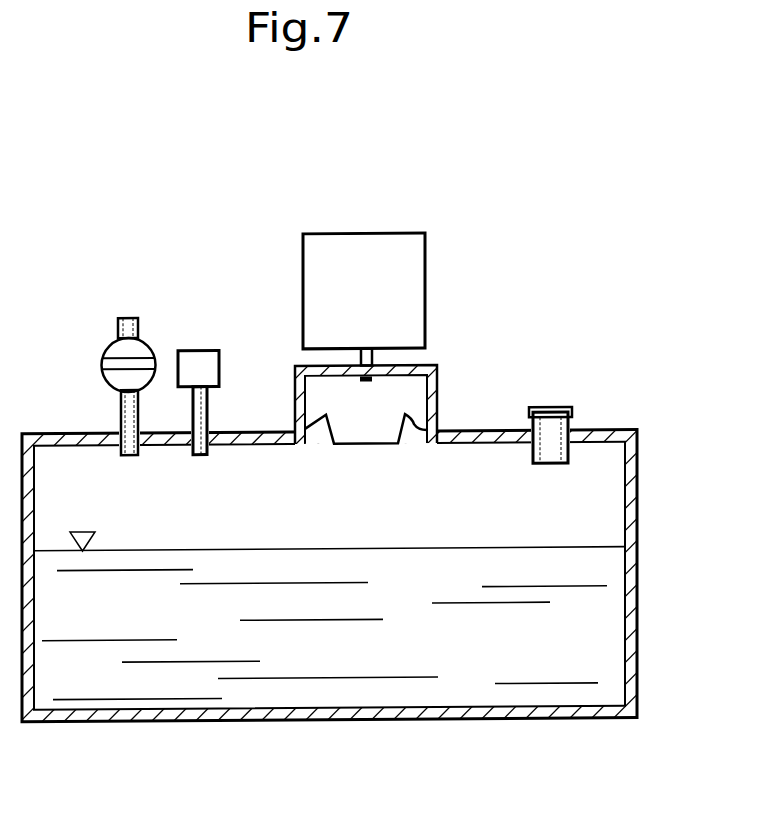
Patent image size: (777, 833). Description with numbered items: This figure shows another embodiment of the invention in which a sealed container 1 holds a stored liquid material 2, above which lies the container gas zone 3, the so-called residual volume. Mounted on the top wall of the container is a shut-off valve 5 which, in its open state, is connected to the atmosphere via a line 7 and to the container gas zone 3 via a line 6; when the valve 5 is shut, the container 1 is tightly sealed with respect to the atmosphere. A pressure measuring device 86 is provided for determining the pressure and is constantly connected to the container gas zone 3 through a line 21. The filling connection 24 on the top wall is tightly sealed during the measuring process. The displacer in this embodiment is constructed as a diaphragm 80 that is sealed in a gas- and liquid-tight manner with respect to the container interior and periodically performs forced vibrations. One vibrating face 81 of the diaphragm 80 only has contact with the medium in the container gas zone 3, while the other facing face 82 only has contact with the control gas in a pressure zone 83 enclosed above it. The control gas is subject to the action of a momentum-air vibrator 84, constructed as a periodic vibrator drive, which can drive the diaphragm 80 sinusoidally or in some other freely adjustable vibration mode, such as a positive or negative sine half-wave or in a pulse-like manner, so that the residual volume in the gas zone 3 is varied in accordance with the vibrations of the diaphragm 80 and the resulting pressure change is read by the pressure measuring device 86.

The container 1 is at (637, 630).
The stored liquid material 2 is at (607, 566).
The container gas zone 3 is at (602, 497).
The shut-off valve 5 is at (143, 348).
The line 6 is at (121, 414).
The line 7 is at (118, 331).
The line 21 is at (207, 414).
The filling connection 24 is at (558, 412).
The diaphragm 80 is at (385, 448).
The vibrating face 81 is at (331, 460).
The facing face 82 is at (365, 443).
The pressure zone 83 is at (438, 370).
The momentum-air vibrator 84 is at (403, 246).
The pressure measuring device 86 is at (202, 360).